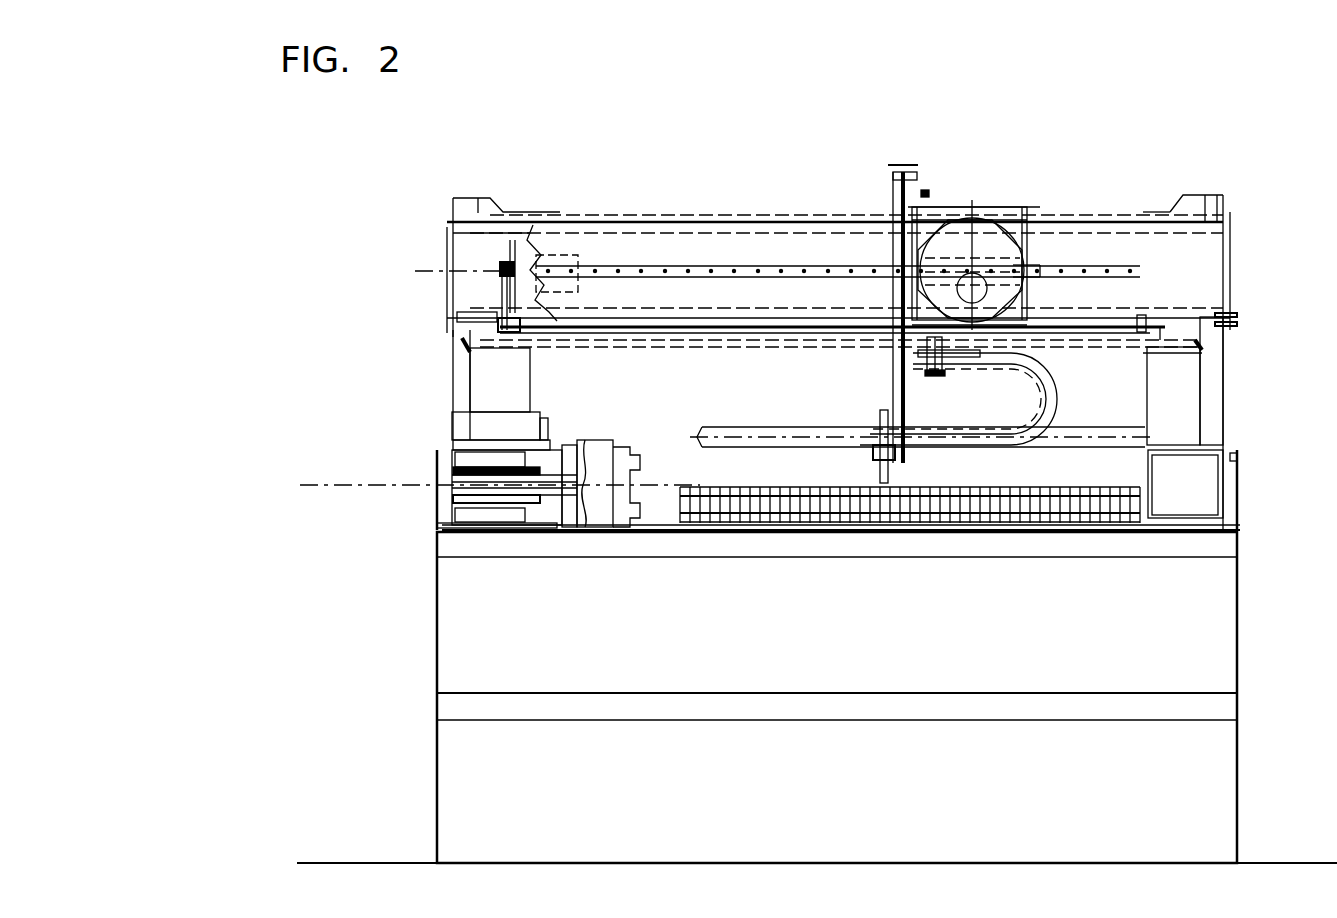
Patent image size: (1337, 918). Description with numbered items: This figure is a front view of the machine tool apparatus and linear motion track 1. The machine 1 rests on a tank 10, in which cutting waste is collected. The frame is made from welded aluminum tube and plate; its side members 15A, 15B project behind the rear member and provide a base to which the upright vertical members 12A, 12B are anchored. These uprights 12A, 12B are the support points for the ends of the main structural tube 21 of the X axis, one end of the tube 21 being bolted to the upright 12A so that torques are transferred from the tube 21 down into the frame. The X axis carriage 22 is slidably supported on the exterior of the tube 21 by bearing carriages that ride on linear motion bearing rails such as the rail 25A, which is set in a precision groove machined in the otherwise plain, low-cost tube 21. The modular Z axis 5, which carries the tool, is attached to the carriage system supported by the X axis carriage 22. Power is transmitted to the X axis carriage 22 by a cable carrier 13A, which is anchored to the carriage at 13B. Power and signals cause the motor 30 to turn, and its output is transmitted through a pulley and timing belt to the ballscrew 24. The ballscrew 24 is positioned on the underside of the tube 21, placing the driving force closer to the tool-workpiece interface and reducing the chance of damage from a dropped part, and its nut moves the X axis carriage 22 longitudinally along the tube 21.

The machine tool apparatus and linear motion track 1 is at (817, 491).
The modular Z axis 5 is at (912, 178).
The tank 10 is at (465, 592).
The upright 12A is at (455, 383).
The upright 12B is at (1218, 370).
The cable carrier 13A is at (1058, 405).
The anchor point of cable carrier 13B is at (942, 377).
The side member 15A is at (1222, 492).
The side member 15B is at (440, 508).
The main structural tube 21 is at (1122, 227).
The X axis carriage 22 is at (1012, 210).
The ballscrew 24 is at (650, 330).
The linear motion bearing rail 25A is at (648, 268).
The motor 30 is at (563, 253).